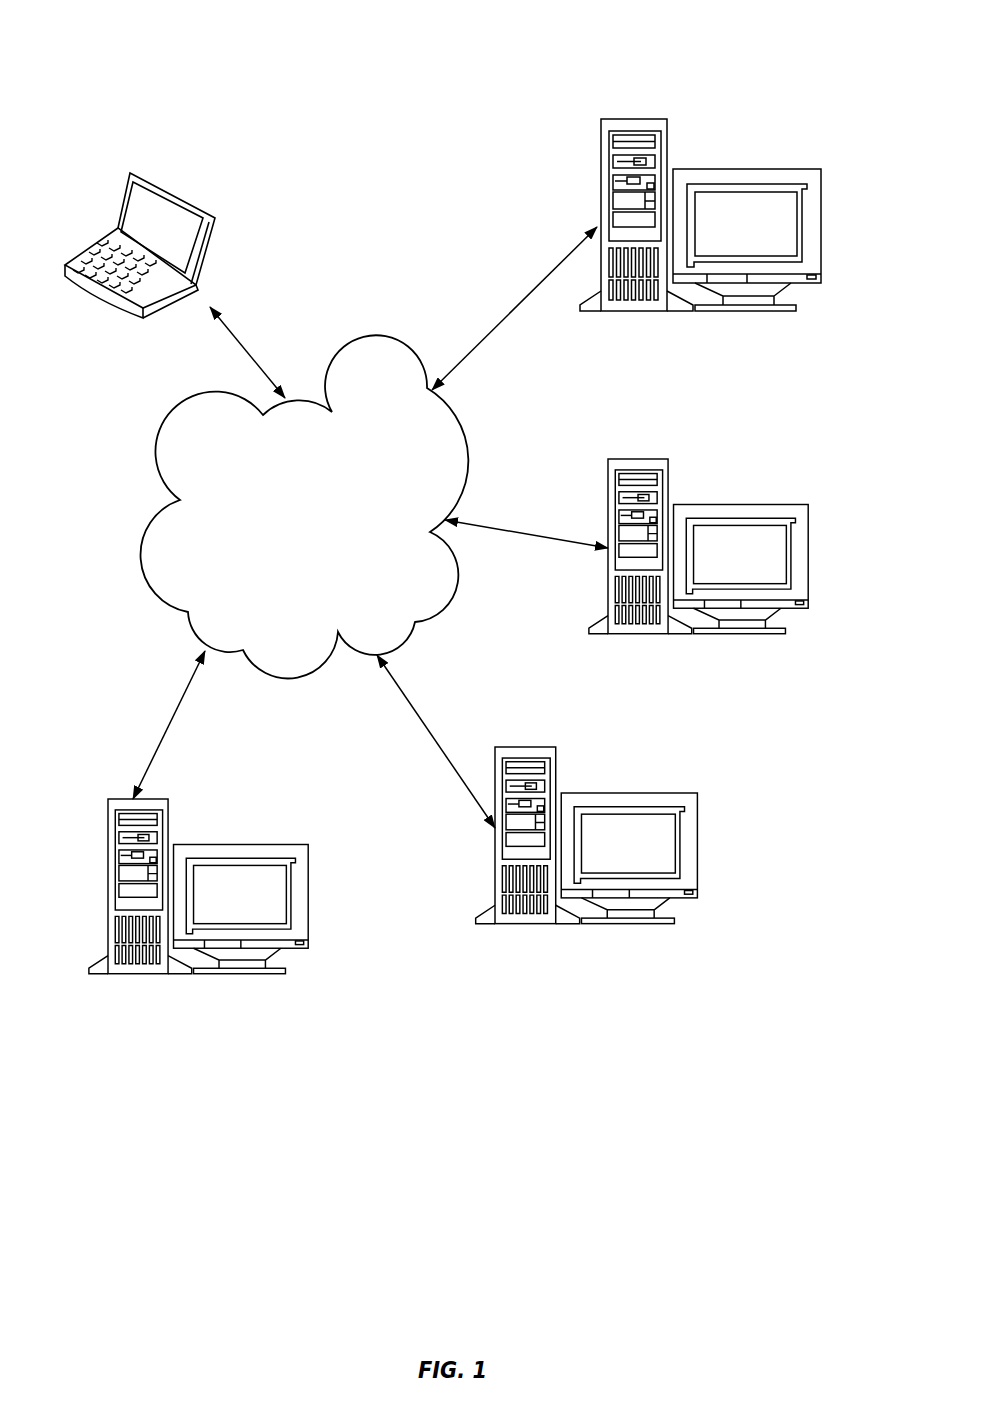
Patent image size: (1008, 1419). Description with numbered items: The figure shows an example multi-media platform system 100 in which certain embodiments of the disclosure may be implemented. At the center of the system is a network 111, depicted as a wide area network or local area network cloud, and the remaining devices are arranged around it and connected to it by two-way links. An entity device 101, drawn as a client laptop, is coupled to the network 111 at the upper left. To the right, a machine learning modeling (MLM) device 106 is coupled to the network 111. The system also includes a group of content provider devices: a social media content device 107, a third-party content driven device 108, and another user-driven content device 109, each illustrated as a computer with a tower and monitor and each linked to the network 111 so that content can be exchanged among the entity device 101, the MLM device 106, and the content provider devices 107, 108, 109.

The multi-media platform system 100 is at (407, 80).
The entity device 101 is at (210, 248).
The machine learning modeling (MLM) device 106 is at (810, 550).
The social media content device 107 is at (697, 837).
The third-party content driven device 108 is at (245, 843).
The user-driven content device 109 is at (820, 218).
The network 111 is at (163, 513).